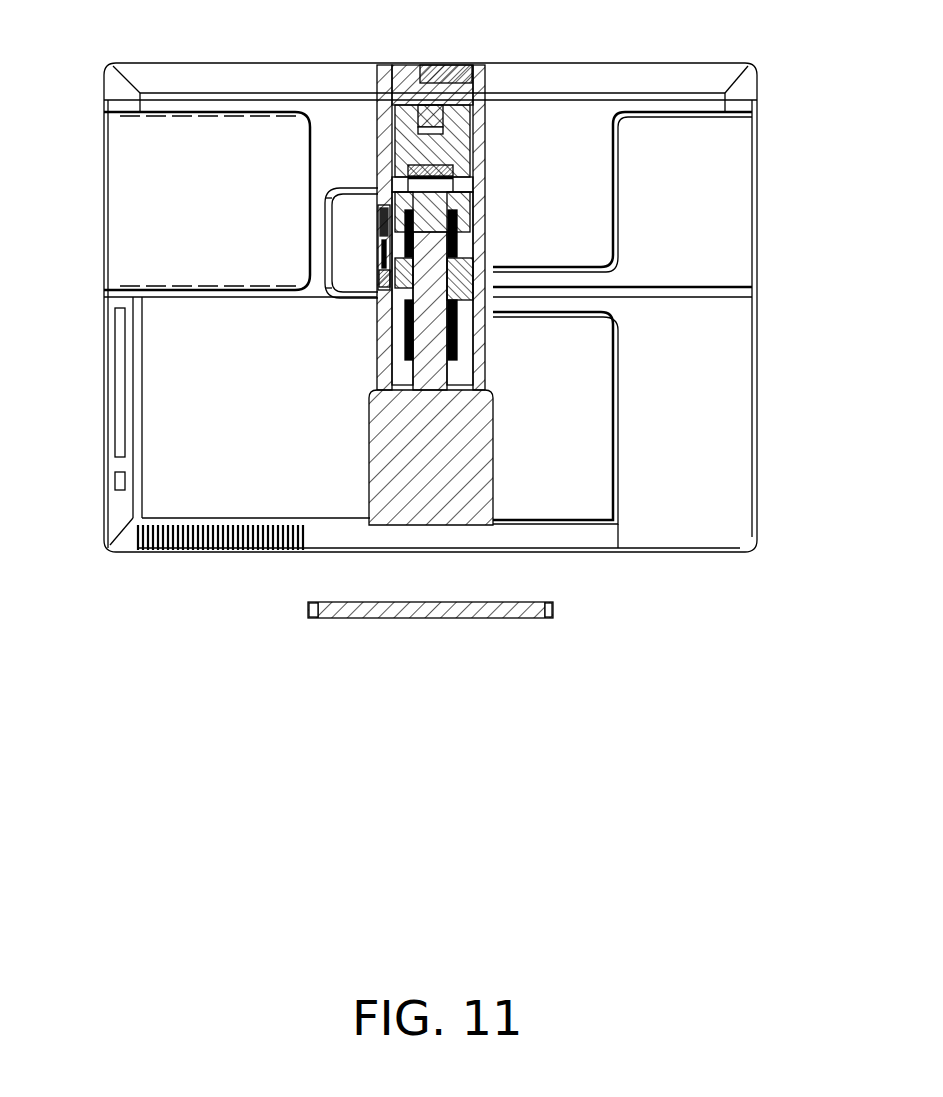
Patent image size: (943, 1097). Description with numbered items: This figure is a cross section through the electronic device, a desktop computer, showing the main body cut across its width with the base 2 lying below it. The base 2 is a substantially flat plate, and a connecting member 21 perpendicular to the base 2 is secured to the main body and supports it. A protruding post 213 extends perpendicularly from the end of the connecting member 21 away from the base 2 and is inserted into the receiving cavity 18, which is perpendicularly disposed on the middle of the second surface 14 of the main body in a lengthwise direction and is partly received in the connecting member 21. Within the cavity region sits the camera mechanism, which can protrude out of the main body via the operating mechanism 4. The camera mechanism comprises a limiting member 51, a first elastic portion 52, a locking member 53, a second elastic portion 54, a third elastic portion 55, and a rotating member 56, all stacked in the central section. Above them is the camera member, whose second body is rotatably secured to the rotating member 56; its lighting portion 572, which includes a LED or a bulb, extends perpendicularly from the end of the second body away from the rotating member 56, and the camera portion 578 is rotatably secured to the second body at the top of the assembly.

The base 2 is at (540, 606).
The operating mechanism 4 is at (385, 257).
The second surface 14 is at (695, 253).
The receiving cavity 18 is at (480, 112).
The connecting member 21 is at (462, 472).
The limiting member 51 is at (403, 315).
The first elastic portion 52 is at (457, 318).
The locking member 53 is at (455, 181).
The second elastic portion 54 is at (440, 228).
The third elastic portion 55 is at (383, 228).
The rotating member 56 is at (400, 120).
The protruding post 213 is at (432, 365).
The lighting portion 572 is at (402, 75).
The camera portion 578 is at (452, 65).